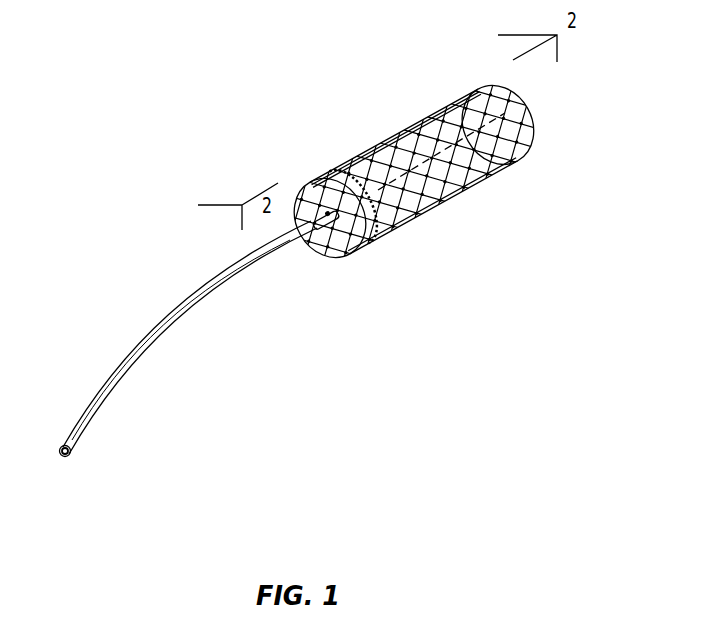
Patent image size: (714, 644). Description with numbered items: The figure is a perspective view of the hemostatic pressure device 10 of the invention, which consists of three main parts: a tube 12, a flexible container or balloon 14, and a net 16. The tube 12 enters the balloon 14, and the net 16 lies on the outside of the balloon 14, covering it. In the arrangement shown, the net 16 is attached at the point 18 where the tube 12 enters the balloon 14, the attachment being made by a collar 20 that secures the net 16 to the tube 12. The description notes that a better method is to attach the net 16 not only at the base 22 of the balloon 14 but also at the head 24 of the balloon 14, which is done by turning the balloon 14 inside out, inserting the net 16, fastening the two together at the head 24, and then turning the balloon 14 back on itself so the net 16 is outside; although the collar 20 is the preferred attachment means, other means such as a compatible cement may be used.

The hemostatic pressure device 10 is at (537, 88).
The tube 12 is at (130, 367).
The balloon 14 is at (447, 200).
The net 16 is at (516, 160).
The point 18 is at (320, 257).
The collar 20 is at (327, 212).
The base 22 is at (343, 259).
The head 24 is at (530, 137).